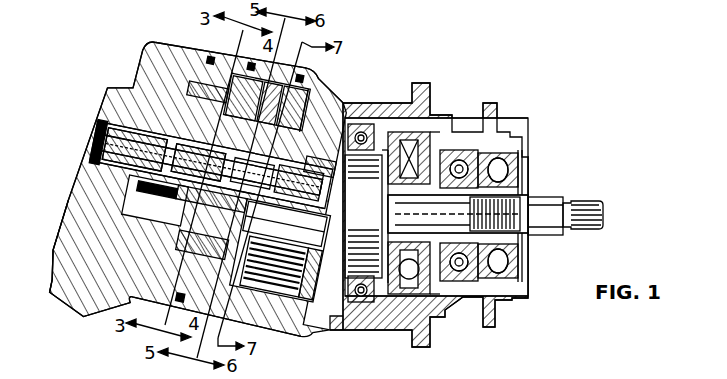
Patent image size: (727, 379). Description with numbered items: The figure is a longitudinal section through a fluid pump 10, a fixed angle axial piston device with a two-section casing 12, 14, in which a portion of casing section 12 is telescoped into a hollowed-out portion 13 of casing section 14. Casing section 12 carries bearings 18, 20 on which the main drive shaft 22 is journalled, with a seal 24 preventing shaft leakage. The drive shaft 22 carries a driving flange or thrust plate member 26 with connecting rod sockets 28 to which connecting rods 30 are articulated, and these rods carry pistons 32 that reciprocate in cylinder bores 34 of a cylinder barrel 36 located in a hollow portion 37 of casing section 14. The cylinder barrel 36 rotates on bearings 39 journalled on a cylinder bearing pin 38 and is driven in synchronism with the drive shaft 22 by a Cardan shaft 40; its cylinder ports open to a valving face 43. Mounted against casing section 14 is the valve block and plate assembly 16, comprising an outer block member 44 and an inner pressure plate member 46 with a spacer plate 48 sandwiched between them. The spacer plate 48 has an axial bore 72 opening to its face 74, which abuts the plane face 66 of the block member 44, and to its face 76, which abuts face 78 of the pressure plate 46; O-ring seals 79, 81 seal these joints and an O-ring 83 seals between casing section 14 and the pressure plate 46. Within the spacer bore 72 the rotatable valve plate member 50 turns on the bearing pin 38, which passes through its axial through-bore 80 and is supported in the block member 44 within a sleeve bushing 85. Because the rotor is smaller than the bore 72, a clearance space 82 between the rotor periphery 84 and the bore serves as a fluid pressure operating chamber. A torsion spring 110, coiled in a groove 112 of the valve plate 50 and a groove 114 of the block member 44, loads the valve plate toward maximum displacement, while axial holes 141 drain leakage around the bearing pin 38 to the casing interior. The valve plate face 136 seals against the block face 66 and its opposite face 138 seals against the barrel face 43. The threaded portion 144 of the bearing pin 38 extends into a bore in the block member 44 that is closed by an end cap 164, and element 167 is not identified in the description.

The fluid pump 10 is at (301, 198).
The casing section 12 is at (479, 207).
The hollowed-out portion 13 is at (391, 116).
The casing section 14 is at (302, 282).
The valve block and plate assembly 16 is at (210, 195).
The bearing 18 is at (470, 284).
The bearing 20 is at (442, 318).
The main drive shaft 22 is at (495, 215).
The seal 24 is at (529, 173).
The driving flange or thrust plate member 26 is at (366, 216).
The connecting rod sockets 28 is at (360, 190).
The connecting rods 30 is at (295, 215).
The pistons 32 is at (319, 169).
The cylinder bores 34 is at (284, 224).
The cylinder barrel 36 is at (282, 261).
The hollow portion 37 is at (263, 264).
The cylinder bearing pin 38 is at (209, 173).
The bearings 39 is at (211, 175).
The Cardan shaft 40 is at (351, 213).
The valving face of the cylinder barrel 43 is at (260, 166).
The outer block member 44 is at (66, 247).
The inner pressure plate member 46 is at (308, 119).
The spacer plate 48 is at (255, 101).
The rotatable valve plate member 50 is at (264, 105).
The plane face 66 is at (138, 277).
The axial bore 72 is at (135, 250).
The face 74 is at (115, 260).
The face 76 is at (200, 252).
The face 78 is at (172, 294).
The O-ring seal 79 is at (123, 299).
The axial through-bore 80 is at (155, 198).
The O-ring seal 81 is at (258, 70).
The clearance space 82 is at (219, 68).
The O-ring 83 is at (314, 96).
The periphery of the rotor 84 is at (212, 92).
The sleeve bushing 85 is at (122, 194).
The torsion spring 110 is at (184, 94).
The groove 112 is at (208, 216).
The groove 114 is at (110, 234).
The face 136 is at (136, 221).
The face 138 is at (241, 251).
The axial holes 141 is at (213, 155).
The threaded portion 144 is at (84, 217).
The end cap or closure member 164 is at (72, 121).
The stop 167 is at (272, 364).